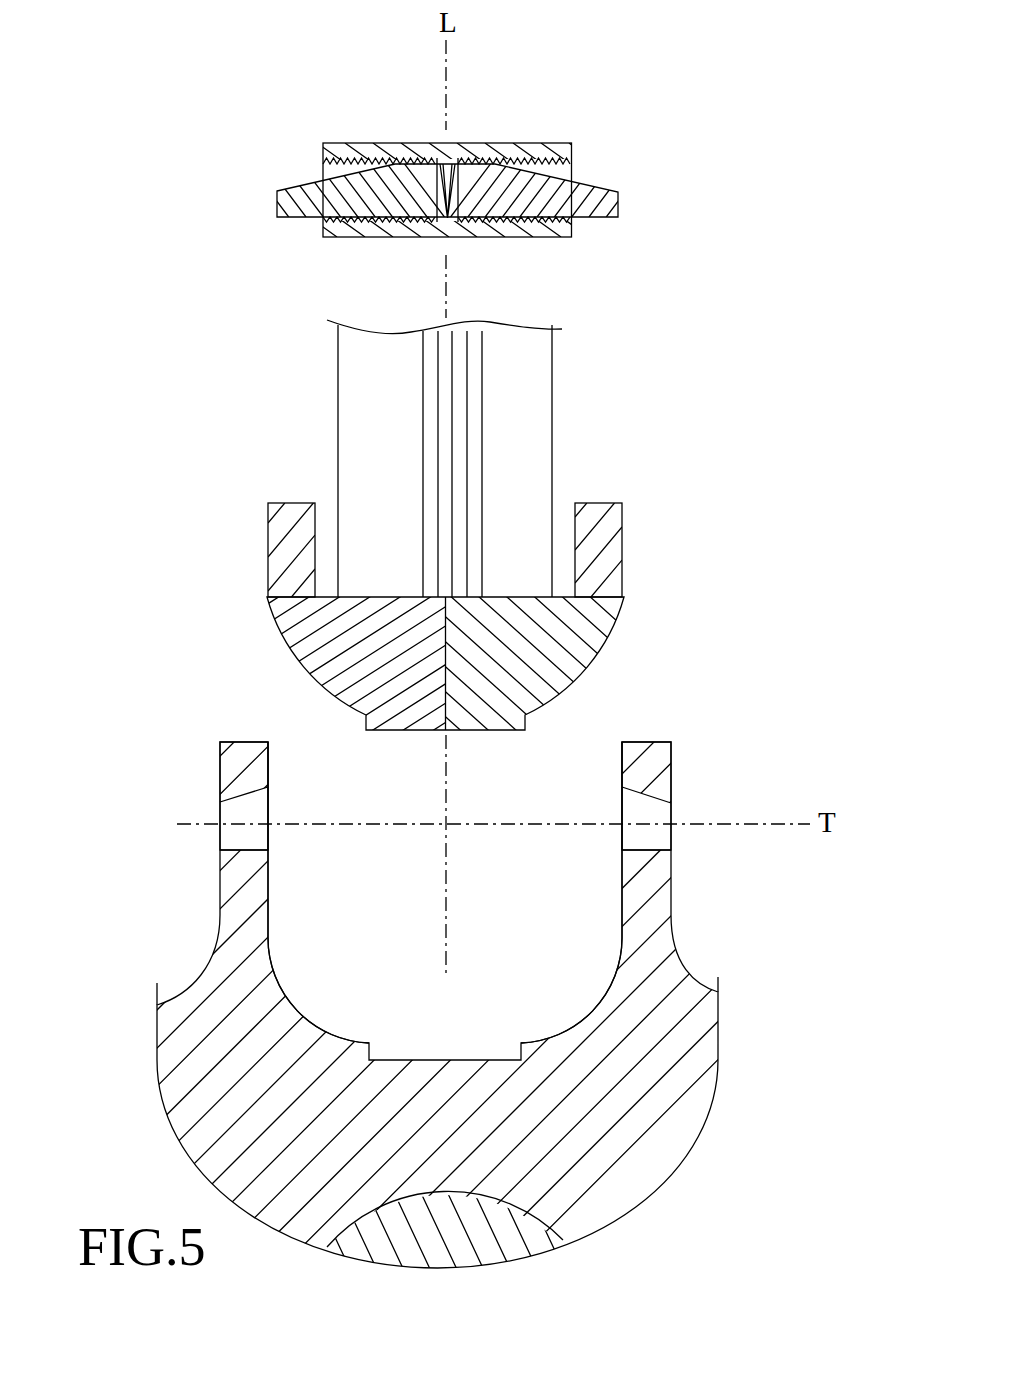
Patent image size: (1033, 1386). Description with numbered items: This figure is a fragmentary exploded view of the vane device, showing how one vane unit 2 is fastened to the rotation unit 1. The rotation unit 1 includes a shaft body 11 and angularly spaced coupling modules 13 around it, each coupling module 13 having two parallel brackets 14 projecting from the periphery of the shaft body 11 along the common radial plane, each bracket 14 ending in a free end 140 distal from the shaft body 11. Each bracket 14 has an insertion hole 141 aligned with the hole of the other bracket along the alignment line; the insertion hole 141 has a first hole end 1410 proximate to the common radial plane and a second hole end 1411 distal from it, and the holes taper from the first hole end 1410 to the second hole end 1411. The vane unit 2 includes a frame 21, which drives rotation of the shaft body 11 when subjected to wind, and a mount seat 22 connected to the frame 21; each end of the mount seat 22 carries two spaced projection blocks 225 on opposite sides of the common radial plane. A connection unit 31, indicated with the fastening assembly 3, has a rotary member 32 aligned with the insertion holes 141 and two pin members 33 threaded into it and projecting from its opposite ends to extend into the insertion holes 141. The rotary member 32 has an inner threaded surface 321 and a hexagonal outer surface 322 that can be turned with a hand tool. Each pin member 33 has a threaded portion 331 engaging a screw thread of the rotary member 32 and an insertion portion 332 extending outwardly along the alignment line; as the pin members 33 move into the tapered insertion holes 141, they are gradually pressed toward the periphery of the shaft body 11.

The rotation unit 1 is at (725, 1046).
The shaft body 11 is at (612, 1156).
The coupling module 13 is at (668, 903).
The bracket 14 is at (650, 767).
The free end 140 is at (243, 770).
The insertion hole 141 is at (240, 830).
The first hole end 1410 is at (268, 807).
The second hole end 1411 is at (222, 843).
The vane unit 2 is at (560, 415).
The frame 21 is at (505, 362).
The mount seat 22 is at (485, 695).
The projection block 225 is at (288, 545).
The fastening member 3 is at (620, 232).
The connection unit 31 is at (429, 110).
The rotary member 32 is at (467, 135).
The inner threaded surface 321 is at (503, 157).
The outer surface 322 is at (542, 142).
The pin member 33 is at (375, 84).
The threaded portion 331 is at (412, 182).
The insertion portion 332 is at (322, 193).